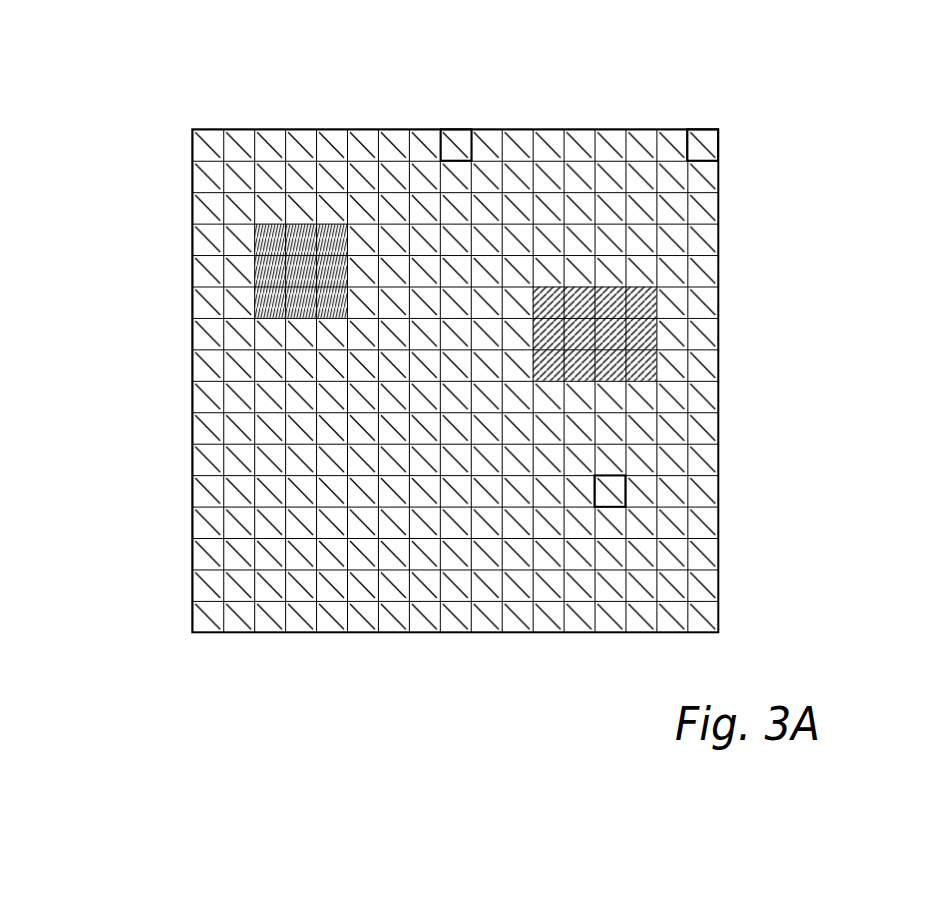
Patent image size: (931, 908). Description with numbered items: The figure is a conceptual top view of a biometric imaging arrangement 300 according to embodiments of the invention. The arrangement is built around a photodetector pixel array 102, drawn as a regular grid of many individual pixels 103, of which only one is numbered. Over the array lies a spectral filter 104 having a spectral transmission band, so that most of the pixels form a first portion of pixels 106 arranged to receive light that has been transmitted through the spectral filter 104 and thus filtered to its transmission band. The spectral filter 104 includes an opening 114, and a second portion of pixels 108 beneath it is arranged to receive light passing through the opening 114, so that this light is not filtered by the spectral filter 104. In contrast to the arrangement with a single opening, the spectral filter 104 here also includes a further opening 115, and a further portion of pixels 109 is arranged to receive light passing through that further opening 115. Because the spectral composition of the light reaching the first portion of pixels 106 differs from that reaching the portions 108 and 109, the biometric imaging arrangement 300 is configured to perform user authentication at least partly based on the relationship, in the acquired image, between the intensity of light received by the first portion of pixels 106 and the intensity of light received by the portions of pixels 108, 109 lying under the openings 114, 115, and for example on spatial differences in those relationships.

The biometric imaging arrangement 300 is at (432, 326).
The photodetector pixel array 102 is at (444, 348).
The pixel 103 is at (702, 146).
The spectral filter 104 is at (459, 146).
The first portion of pixels 106 is at (618, 489).
The second portion of pixels 108 is at (673, 227).
The further portion of pixels 109 is at (316, 191).
The opening 114 is at (583, 293).
The further opening 115 is at (328, 232).